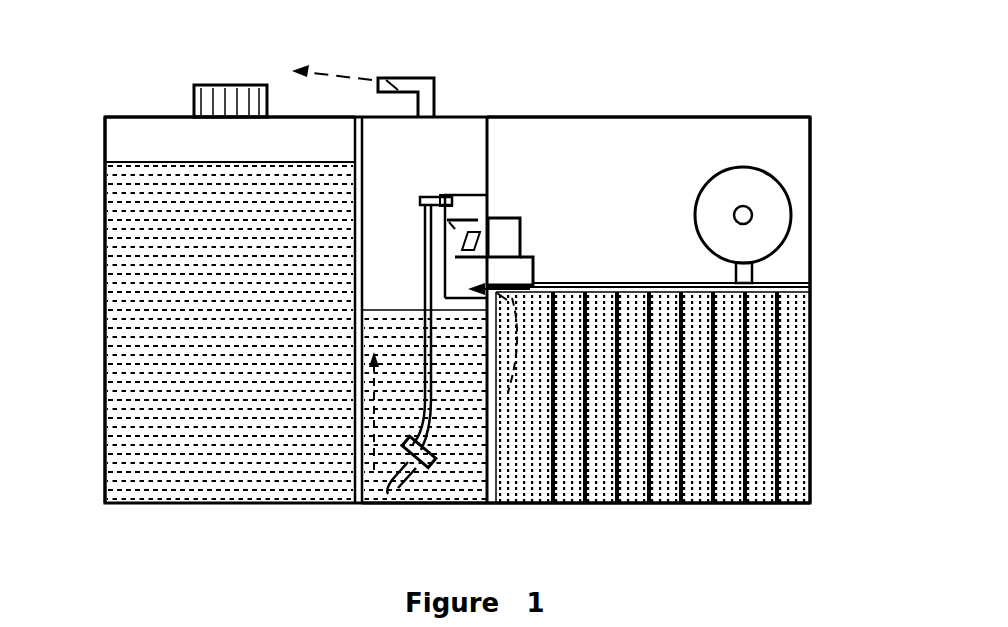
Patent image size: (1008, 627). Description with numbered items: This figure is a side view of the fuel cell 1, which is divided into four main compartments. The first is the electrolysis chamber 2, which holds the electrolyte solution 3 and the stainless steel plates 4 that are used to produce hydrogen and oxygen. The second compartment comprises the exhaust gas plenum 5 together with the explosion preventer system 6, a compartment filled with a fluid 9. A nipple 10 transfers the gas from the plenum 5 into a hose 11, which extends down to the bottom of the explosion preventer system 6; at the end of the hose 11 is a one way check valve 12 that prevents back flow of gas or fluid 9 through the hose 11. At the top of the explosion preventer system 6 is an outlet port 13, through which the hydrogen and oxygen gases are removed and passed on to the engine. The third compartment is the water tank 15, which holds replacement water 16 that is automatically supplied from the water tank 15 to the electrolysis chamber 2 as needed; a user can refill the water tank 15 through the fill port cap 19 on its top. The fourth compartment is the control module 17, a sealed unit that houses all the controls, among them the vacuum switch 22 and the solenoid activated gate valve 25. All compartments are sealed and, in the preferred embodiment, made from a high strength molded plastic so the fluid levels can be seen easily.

The fuel cell 1 is at (598, 40).
The electrolysis chamber 2 is at (80, 292).
The electrolyte solution 3 is at (520, 480).
The stainless steel plates 4 is at (648, 504).
The exhaust gas plenum 5 is at (456, 190).
The explosion preventer system (EPS) 6 is at (423, 505).
The fluid 9 is at (395, 305).
The nipple 10 is at (432, 196).
The hose 11 is at (435, 350).
The one way check valve 12 is at (436, 456).
The outlet port 13 is at (431, 76).
The water tank 15 is at (147, 121).
The replacement water 16 is at (135, 232).
The control module 17 is at (667, 116).
The fill port cap 19 is at (205, 84).
The vacuum switch 22 is at (530, 240).
The solenoid activated gate valve 25 is at (697, 215).